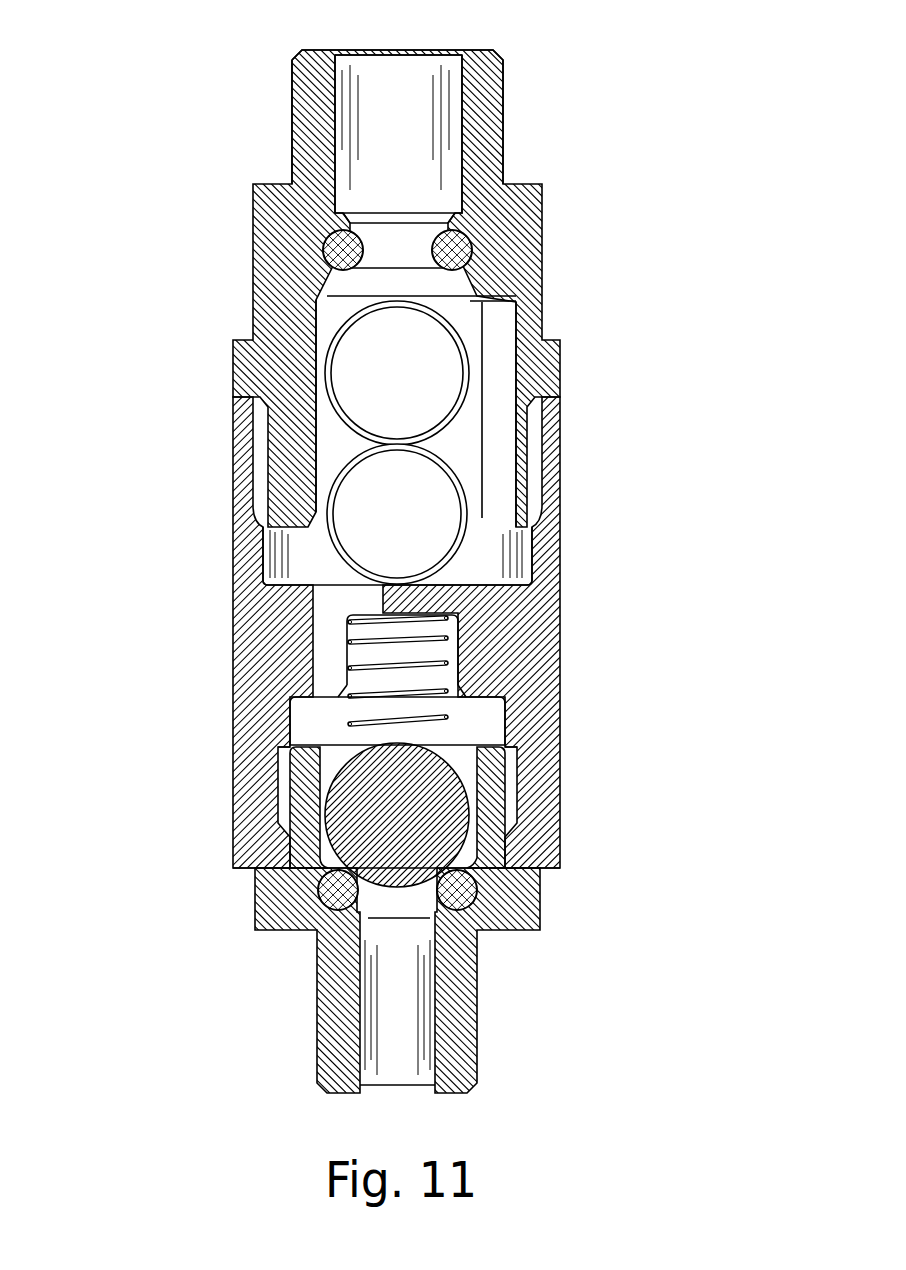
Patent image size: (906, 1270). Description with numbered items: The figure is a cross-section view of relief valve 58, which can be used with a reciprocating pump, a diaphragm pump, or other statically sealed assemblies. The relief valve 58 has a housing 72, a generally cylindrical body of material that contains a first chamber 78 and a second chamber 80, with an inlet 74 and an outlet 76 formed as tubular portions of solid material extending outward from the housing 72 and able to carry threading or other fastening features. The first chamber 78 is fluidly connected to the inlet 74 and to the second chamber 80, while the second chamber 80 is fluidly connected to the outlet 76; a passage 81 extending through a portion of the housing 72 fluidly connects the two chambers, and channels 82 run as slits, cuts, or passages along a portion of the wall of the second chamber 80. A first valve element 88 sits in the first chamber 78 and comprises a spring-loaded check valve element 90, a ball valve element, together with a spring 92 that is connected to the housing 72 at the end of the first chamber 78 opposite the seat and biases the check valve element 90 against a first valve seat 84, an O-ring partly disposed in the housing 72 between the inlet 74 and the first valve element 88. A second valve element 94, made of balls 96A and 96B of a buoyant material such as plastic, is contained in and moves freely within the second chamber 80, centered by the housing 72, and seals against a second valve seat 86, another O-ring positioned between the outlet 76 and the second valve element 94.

The relief valve 58 is at (124, 86).
The housing 72 is at (548, 260).
The inlet 74 is at (478, 1023).
The outlet 76 is at (506, 96).
The first chamber 78 is at (483, 712).
The second chamber 80 is at (335, 438).
The passage 81 is at (323, 610).
The channels 82 is at (500, 520).
The first valve seat 84 is at (319, 893).
The second valve seat 86 is at (324, 251).
The first valve element 88 is at (333, 764).
The spring-loaded check valve element 90 is at (470, 838).
The spring 92 is at (455, 660).
The second valve element 94 is at (472, 477).
The ball 96A is at (470, 382).
The ball 96B is at (335, 536).